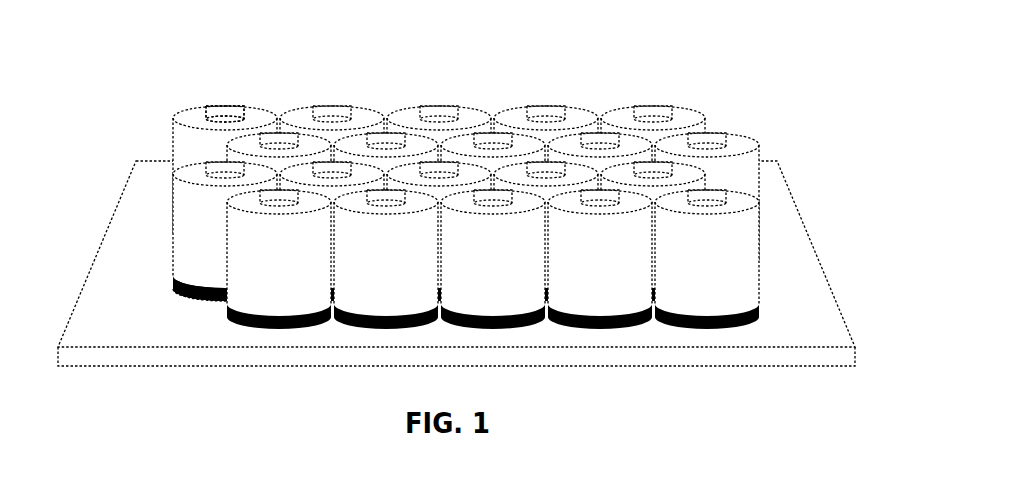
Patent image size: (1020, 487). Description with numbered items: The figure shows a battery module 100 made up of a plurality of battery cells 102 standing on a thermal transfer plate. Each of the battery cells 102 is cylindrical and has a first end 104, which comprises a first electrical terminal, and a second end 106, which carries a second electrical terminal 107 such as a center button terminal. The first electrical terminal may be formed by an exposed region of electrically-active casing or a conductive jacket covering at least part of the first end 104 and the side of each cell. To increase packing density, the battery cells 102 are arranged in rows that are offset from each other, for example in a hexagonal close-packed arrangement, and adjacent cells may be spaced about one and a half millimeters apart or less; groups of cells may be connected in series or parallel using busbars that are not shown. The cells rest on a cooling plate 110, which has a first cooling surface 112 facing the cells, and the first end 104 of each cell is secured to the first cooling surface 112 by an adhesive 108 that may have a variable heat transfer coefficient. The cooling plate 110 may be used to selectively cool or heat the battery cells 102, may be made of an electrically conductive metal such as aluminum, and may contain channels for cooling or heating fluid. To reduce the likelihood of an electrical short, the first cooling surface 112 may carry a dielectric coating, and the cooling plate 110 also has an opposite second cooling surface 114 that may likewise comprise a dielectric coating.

The battery module 100 is at (476, 33).
The battery cells 102 is at (147, 292).
The first end 104 is at (172, 283).
The second end 106 is at (191, 118).
The second electrical terminal 107 is at (223, 107).
The adhesive 108 is at (210, 300).
The cooling plate 110 is at (496, 304).
The first cooling surface 112 is at (810, 299).
The second cooling surface 114 is at (811, 386).